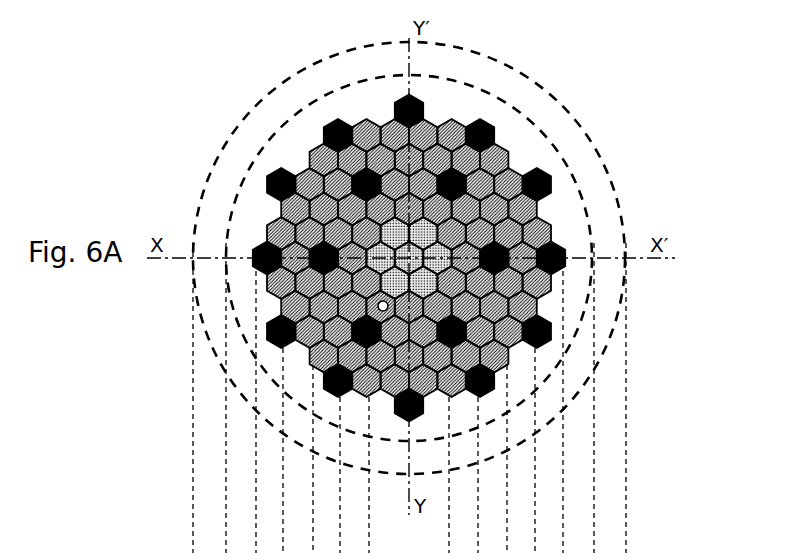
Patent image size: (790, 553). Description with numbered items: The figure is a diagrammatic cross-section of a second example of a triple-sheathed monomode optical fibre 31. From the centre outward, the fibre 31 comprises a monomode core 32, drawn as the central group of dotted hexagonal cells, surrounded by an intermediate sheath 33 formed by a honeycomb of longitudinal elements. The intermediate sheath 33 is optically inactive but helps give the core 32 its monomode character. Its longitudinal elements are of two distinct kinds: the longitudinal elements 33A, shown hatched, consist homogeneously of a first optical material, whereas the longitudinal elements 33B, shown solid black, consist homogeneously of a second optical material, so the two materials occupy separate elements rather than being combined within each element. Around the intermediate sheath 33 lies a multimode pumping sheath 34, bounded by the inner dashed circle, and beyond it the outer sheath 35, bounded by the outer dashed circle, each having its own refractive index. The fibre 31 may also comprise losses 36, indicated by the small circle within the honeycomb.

The monomode optical fibre 31 is at (373, 250).
The monomode core 32 is at (437, 233).
The intermediate sheath 33 is at (507, 187).
The longitudinal elements 33A is at (327, 357).
The longitudinal elements 33B is at (563, 262).
The multimode pumping sheath 34 is at (256, 207).
The outer sheath 35 is at (213, 217).
The losses 36 is at (386, 312).